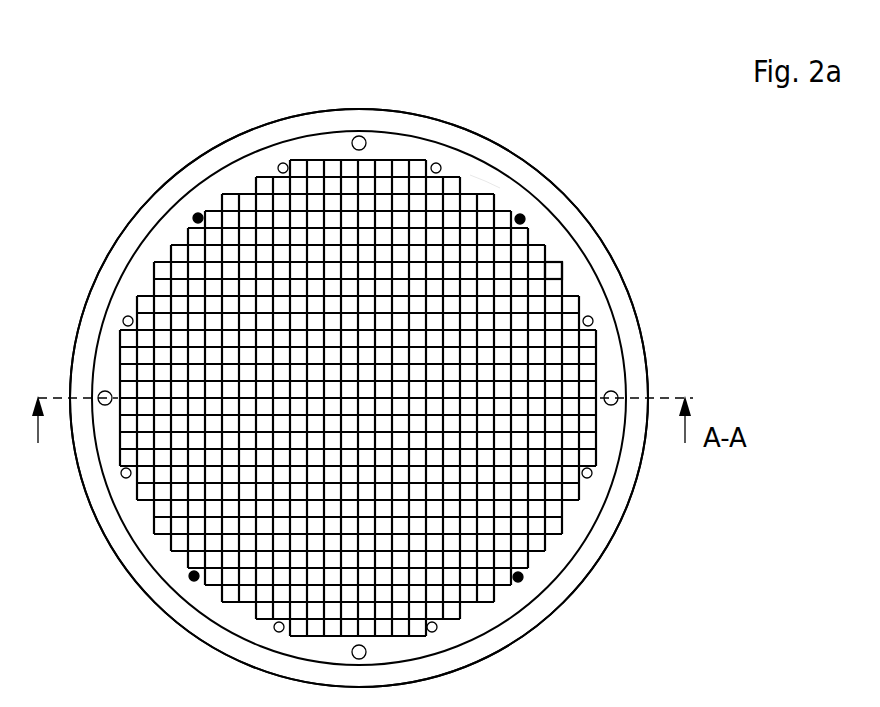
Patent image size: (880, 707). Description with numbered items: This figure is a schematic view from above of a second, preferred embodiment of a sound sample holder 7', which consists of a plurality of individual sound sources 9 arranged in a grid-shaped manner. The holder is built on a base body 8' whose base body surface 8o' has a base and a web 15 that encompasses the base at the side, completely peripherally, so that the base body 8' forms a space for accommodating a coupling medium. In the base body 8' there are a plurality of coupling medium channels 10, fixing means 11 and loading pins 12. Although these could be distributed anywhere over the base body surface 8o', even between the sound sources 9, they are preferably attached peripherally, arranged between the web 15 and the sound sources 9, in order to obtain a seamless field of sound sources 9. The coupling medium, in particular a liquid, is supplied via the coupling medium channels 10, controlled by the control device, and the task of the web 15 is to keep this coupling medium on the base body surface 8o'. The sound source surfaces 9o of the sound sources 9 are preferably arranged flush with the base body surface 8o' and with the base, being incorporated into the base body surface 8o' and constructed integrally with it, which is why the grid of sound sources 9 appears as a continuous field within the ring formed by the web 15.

The sound sample holder 7' is at (359, 353).
The base body 8' is at (359, 369).
The base body surface 8o' is at (523, 143).
The sound sources 9 is at (488, 202).
The sound source surfaces 9o is at (562, 268).
The coupling medium channels 10 is at (614, 394).
The fixing means 11 is at (592, 318).
The loading pins 12 is at (524, 216).
The web 15 is at (607, 520).